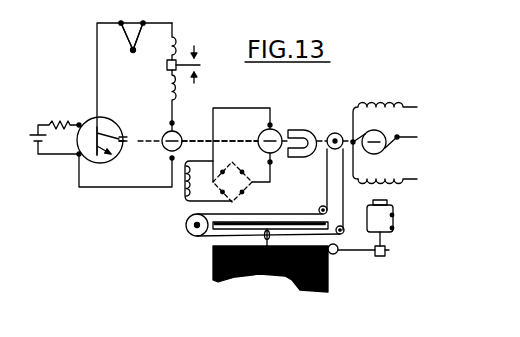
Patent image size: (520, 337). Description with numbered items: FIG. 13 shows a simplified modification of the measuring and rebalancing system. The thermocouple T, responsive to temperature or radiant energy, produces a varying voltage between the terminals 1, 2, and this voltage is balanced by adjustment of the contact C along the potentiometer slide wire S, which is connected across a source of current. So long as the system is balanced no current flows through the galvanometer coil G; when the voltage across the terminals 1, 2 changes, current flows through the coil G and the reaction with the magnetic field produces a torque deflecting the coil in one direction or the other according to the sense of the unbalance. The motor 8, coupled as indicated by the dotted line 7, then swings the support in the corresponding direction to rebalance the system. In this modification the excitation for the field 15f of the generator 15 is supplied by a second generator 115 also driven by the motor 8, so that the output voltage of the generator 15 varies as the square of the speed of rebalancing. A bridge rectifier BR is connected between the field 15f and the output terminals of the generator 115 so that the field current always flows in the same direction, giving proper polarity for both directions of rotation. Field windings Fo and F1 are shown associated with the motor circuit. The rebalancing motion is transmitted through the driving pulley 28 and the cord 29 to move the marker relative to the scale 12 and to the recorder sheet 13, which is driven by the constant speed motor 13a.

The terminal 1 is at (125, 27).
The terminal 2 is at (141, 27).
The thermocouple T is at (132, 48).
The galvanometer coil G is at (167, 68).
The potentiometer slide wire S is at (109, 120).
The contact C is at (128, 141).
The generator 15 is at (165, 149).
The dotted line 7 is at (196, 140).
The second generator 115 is at (277, 129).
The driving pulley 28 is at (336, 132).
The field winding Fo is at (378, 101).
The motor 8 is at (387, 132).
The bridge rectifier BR is at (246, 185).
The field of generator 15f is at (189, 188).
The cord 29 is at (327, 178).
The scale 12 is at (291, 221).
The field winding F1 is at (400, 183).
The constant speed motor 13a is at (393, 215).
The recorder sheet 13 is at (328, 276).